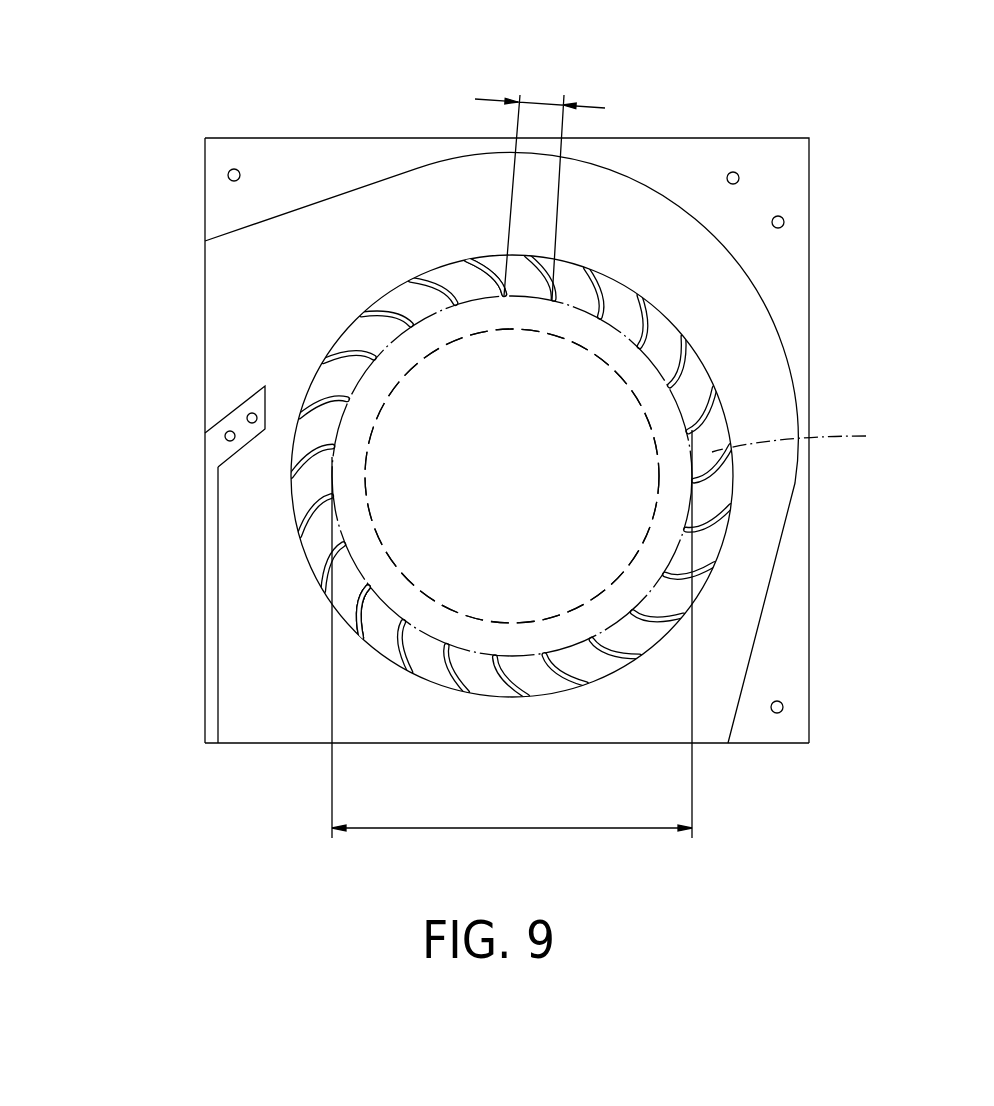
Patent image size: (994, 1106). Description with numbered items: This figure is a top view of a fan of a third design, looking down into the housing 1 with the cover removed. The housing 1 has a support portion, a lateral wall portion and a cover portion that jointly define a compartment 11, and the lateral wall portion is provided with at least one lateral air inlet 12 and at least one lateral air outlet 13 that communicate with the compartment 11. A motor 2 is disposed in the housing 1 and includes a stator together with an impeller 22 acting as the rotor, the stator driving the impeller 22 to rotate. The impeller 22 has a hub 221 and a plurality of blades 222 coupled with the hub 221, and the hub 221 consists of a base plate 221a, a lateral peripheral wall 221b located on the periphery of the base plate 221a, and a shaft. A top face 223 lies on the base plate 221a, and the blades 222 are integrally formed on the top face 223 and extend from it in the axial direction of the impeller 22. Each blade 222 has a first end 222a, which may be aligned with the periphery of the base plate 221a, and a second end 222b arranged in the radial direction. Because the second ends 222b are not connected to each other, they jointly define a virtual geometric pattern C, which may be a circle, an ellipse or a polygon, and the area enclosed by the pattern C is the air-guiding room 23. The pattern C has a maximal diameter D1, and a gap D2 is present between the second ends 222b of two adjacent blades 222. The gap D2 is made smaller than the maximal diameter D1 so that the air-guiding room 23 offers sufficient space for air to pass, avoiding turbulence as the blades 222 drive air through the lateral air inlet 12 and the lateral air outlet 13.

The housing 1 is at (466, 431).
The motor 2 is at (459, 414).
The compartment 11 is at (503, 473).
The lateral air inlet 12 is at (703, 733).
The lateral air outlet 13 is at (213, 298).
The impeller 22 is at (390, 414).
The hub 221 is at (328, 450).
The base plate 221a is at (460, 277).
The lateral peripheral wall 221b is at (417, 362).
The blade 222 is at (309, 505).
The first end 222a is at (368, 618).
The second end 222b is at (377, 573).
The top face 223 is at (316, 545).
The air-guiding room 23 is at (640, 454).
The virtual geometric pattern C is at (800, 439).
The maximal diameter D1 is at (512, 634).
The gap D2 is at (540, 179).